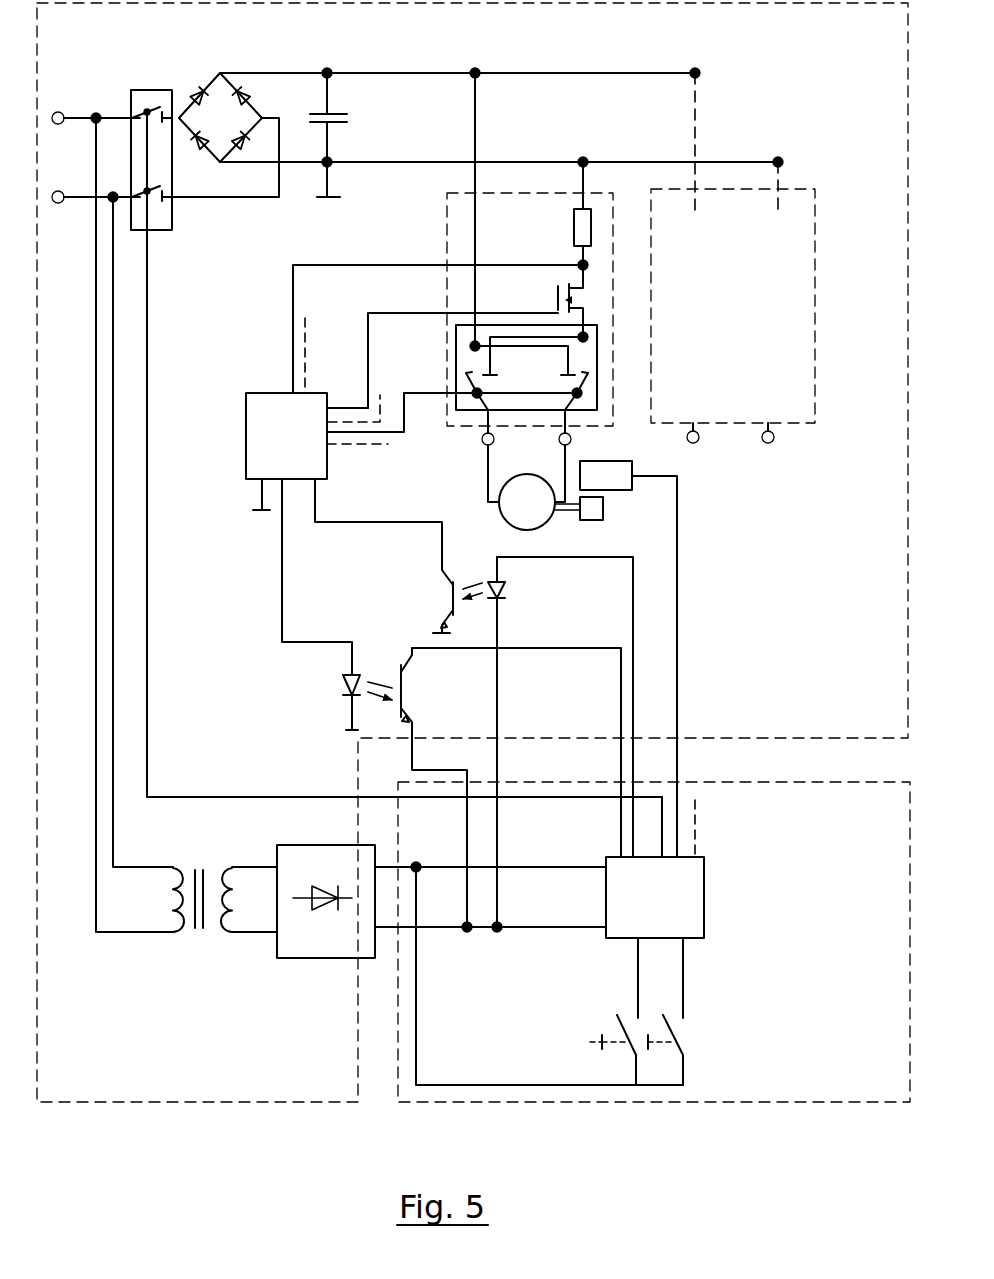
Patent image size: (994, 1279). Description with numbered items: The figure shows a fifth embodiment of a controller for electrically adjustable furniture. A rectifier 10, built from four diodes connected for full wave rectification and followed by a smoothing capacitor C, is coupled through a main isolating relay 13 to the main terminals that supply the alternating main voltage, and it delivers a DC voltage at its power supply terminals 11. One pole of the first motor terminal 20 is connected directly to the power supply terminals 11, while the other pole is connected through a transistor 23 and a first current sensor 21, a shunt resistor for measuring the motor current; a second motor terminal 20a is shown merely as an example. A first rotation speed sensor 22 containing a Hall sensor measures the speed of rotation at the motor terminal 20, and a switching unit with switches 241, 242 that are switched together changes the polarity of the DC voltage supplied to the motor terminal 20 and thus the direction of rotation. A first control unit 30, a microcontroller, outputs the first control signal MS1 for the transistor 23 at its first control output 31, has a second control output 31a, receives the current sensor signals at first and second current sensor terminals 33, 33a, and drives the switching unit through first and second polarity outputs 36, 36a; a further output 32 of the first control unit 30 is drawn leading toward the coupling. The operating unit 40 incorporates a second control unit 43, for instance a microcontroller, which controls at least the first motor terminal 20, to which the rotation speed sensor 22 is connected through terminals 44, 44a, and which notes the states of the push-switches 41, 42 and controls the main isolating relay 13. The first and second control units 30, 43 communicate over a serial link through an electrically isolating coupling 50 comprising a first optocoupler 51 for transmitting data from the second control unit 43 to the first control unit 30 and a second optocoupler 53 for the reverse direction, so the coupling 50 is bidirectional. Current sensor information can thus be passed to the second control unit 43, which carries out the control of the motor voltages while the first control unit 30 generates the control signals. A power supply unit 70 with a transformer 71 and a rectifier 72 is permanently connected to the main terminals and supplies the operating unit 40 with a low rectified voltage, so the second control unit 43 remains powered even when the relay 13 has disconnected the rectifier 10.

The rectifier 10 is at (188, 70).
The power supply terminals 11 is at (475, 73).
The main isolating relay 13 is at (157, 232).
The first motor terminal 20 is at (494, 446).
The second motor terminal 20a is at (699, 440).
The first current sensor 21 is at (574, 230).
The first rotation speed sensor 22 is at (615, 503).
The transistor 23 is at (585, 313).
The switch 241 is at (480, 403).
The switch 242 is at (573, 405).
The first control unit 30 is at (246, 427).
The first control output 31 is at (330, 410).
The second control output 31a is at (332, 417).
The output line 32 is at (285, 480).
The first current sensor terminal 33 is at (293, 390).
The second current sensor terminal 33a is at (305, 390).
The first polarity output 36 is at (330, 447).
The second polarity output 36a is at (330, 442).
The operating unit 40 is at (788, 985).
The push-switch 41 is at (682, 1037).
The push-switch 42 is at (598, 1042).
The second control unit 43 is at (704, 908).
The terminal 44 is at (677, 857).
The terminal 44a is at (697, 857).
The electrically isolating coupling 50 is at (319, 672).
The first optocoupler 51 is at (469, 572).
The second optocoupler 53 is at (375, 652).
The power supply unit 70 is at (222, 967).
The transformer 71 is at (200, 860).
The rectifier 72 is at (320, 958).
The smoothing capacitor C is at (343, 112).
The first control signal MS1 is at (442, 346).